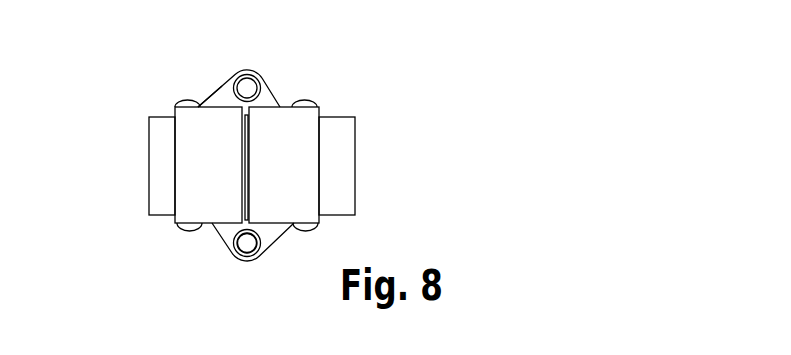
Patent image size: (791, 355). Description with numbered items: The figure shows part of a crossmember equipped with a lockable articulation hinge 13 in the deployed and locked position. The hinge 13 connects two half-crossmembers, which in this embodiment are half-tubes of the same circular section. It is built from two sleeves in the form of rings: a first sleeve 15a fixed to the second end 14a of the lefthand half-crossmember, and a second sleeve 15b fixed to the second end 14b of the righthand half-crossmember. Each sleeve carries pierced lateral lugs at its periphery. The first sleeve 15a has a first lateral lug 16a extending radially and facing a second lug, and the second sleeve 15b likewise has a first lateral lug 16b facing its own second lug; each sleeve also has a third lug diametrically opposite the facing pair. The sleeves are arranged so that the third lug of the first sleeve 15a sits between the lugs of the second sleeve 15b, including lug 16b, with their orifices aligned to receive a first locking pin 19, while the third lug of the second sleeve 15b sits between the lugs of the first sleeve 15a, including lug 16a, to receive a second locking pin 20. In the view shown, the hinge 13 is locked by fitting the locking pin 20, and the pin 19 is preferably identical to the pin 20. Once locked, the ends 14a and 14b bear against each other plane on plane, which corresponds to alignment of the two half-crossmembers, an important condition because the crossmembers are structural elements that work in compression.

The articulation hinge 13 is at (188, 74).
The second end of the lefthand half-crossmember 14a is at (162, 147).
The second end of the righthand half-crossmember 14b is at (333, 123).
The first sleeve 15a is at (198, 185).
The second sleeve 15b is at (305, 190).
The first lateral lug of the first sleeve 16a is at (227, 245).
The first lateral lug of the second sleeve 16b is at (266, 86).
The first locking pin 19 is at (221, 87).
The second locking pin 20 is at (253, 244).